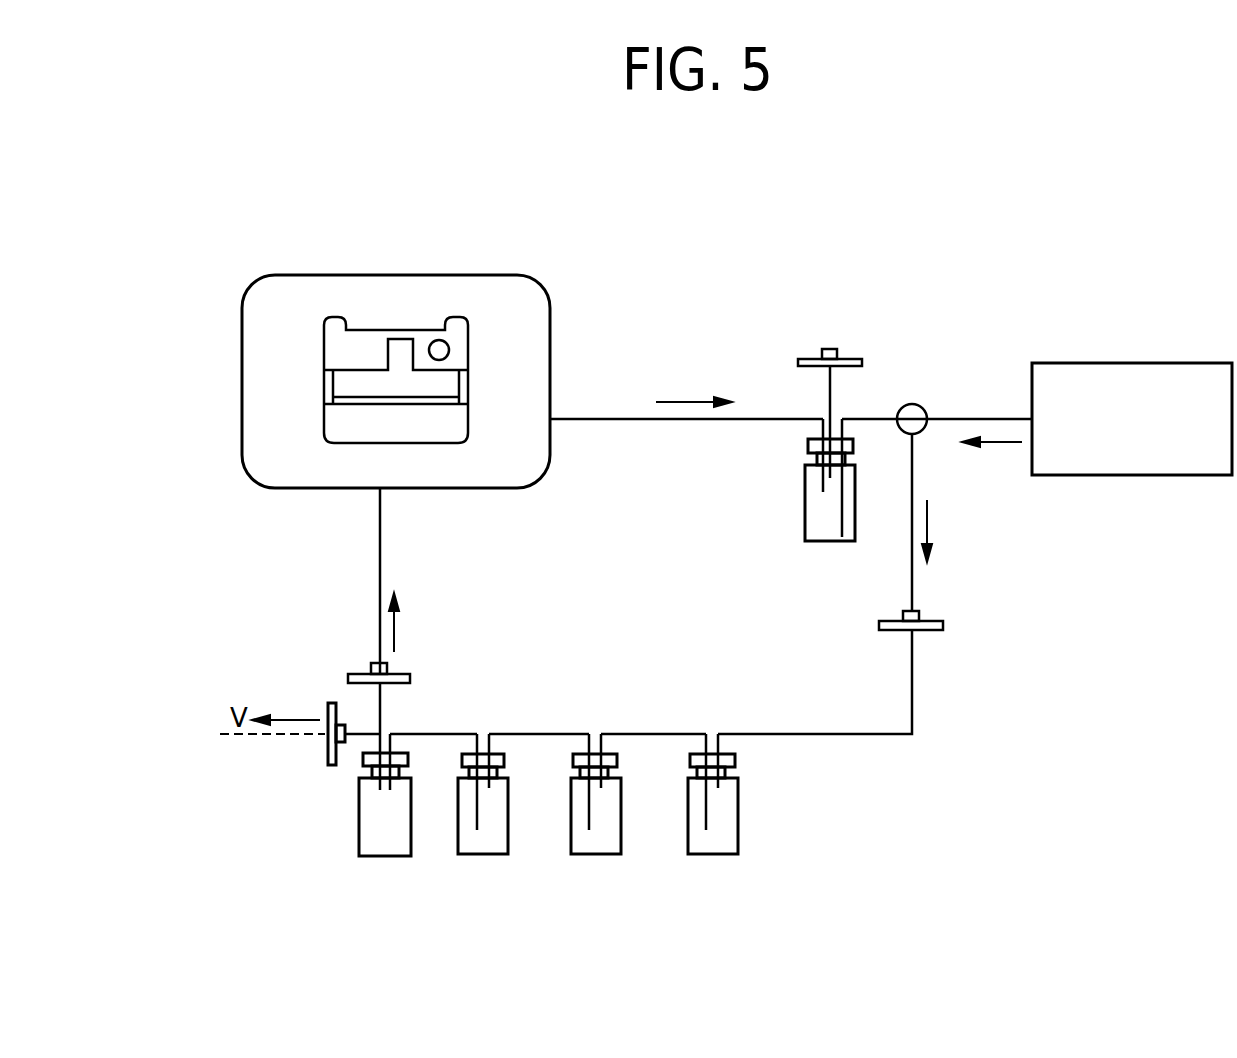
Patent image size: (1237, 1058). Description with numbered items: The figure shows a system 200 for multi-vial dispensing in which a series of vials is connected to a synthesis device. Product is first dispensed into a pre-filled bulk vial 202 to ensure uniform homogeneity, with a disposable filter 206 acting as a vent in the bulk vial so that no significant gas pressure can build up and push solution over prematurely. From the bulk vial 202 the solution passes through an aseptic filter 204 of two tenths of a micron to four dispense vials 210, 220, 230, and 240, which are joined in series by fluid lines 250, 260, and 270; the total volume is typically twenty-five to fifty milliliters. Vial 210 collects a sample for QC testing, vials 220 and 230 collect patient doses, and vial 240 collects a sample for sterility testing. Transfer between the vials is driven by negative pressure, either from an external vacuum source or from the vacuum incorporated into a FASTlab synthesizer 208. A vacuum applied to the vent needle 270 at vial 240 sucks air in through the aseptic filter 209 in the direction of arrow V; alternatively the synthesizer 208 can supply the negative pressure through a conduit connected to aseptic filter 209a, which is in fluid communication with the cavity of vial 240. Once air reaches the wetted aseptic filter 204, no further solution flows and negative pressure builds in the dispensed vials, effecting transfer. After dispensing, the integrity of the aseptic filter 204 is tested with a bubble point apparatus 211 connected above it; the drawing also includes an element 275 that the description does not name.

The system 200 is at (454, 224).
The bulk vial 202 is at (805, 497).
The aseptic filter 204 is at (922, 620).
The disposable filter 206 is at (852, 358).
The FASTlab synthesizer 208 is at (323, 393).
The aseptic filter 209 is at (327, 754).
The aseptic filter 209a is at (392, 673).
The dispense vial 210 is at (738, 832).
The bubble point apparatus 211 is at (1160, 363).
The dispense vial 220 is at (621, 832).
The dispense vial 230 is at (508, 832).
The dispense vial 240 is at (359, 846).
The fluid line 250 is at (640, 733).
The fluid line 260 is at (530, 733).
The fluid line 270 is at (418, 733).
The pressure sensor 275 is at (918, 406).